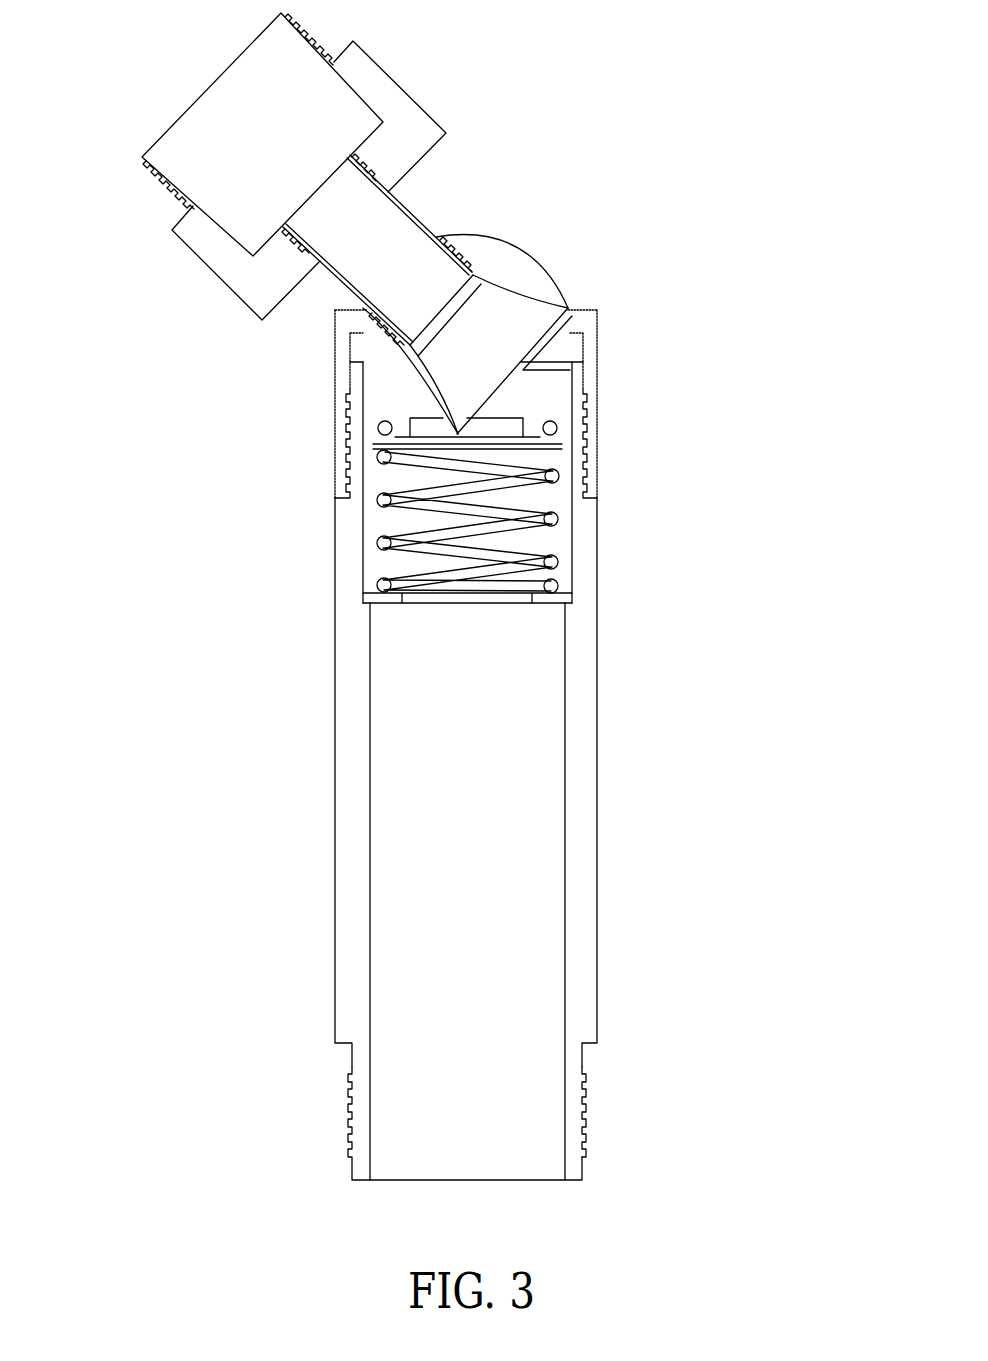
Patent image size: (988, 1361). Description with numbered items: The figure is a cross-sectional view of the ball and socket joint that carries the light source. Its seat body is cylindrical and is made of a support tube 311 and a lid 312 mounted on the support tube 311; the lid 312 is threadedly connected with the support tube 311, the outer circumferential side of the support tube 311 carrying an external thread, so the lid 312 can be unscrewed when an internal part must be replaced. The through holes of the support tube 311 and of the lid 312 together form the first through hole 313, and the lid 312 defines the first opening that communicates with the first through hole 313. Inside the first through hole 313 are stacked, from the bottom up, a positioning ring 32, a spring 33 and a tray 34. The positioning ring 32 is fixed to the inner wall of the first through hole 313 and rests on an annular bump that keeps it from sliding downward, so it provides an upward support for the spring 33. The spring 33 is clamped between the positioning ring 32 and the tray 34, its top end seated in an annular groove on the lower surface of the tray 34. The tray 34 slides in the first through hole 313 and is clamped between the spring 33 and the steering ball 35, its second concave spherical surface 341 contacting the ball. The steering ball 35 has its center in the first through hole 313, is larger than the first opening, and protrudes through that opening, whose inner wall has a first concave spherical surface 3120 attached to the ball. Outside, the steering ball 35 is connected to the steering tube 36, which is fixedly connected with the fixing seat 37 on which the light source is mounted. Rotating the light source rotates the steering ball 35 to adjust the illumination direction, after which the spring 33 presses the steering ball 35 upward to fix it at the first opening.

The fixing seat 37 is at (412, 122).
The steering tube 36 is at (417, 203).
The steering ball 35 is at (540, 262).
The first concave spherical surface 3120 is at (565, 322).
The second concave spherical surface 341 is at (540, 390).
The tray 34 is at (553, 427).
The spring 33 is at (557, 471).
The first through hole 313 is at (548, 543).
The positioning ring 32 is at (562, 577).
The lid 312 is at (340, 398).
The support tube 311 is at (582, 738).